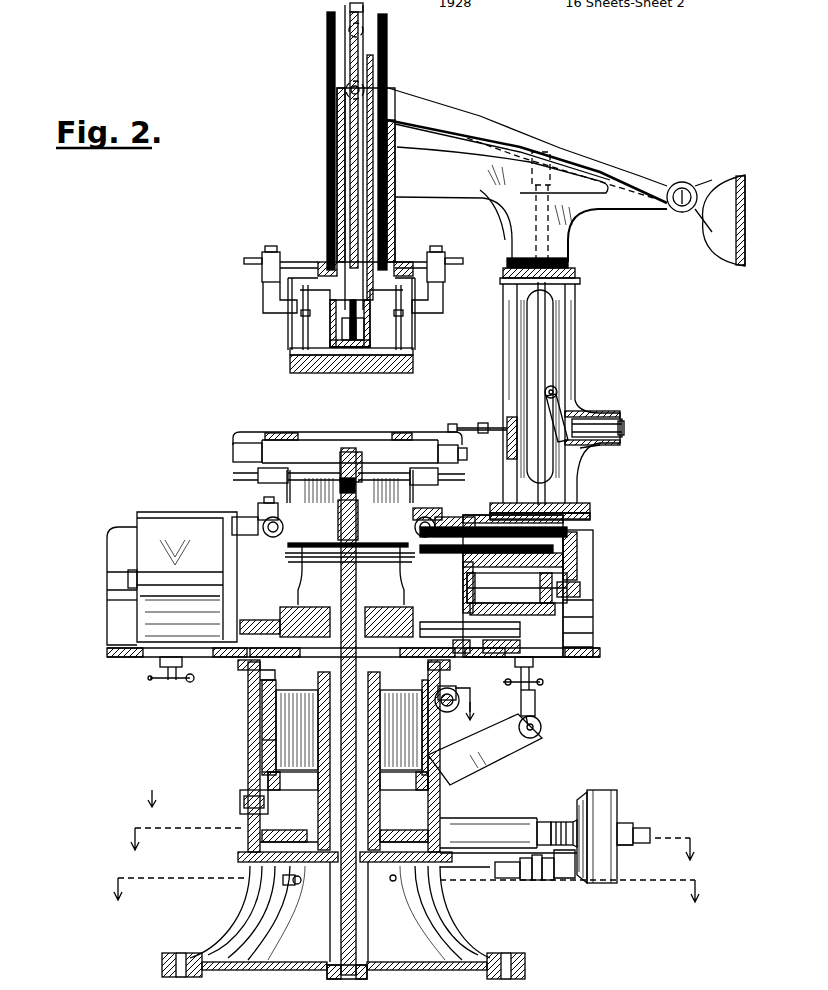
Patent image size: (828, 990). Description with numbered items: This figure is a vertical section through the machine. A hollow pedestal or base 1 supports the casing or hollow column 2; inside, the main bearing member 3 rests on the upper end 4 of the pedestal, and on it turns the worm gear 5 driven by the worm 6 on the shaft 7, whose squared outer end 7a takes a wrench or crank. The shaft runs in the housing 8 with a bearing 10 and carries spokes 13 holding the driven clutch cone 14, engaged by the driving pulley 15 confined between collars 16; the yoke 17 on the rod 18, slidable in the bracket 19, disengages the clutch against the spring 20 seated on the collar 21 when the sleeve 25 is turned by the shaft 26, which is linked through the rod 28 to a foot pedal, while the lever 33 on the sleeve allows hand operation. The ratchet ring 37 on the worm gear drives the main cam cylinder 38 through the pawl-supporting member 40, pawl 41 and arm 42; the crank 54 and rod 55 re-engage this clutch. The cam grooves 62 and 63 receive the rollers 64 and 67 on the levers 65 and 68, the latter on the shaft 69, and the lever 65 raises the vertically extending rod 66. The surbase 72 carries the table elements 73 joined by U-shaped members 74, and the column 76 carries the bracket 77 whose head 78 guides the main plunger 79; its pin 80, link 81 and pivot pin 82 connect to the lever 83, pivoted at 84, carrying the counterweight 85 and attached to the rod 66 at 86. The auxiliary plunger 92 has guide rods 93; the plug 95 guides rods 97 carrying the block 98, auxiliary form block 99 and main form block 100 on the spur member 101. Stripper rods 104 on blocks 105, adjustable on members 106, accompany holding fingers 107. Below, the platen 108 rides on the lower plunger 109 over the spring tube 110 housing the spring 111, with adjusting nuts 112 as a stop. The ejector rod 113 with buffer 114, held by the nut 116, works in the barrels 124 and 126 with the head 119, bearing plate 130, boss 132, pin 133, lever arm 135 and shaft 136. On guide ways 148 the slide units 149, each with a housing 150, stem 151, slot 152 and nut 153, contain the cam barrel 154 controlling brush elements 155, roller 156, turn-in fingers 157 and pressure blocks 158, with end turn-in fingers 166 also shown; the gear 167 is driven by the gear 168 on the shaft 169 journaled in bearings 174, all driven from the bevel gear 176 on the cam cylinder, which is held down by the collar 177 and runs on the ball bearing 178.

The pedestal or base 1 is at (195, 958).
The casing or hollow column 2 is at (252, 738).
The main bearing member 3 is at (330, 700).
The upper end of the pedestal 4 is at (255, 856).
The worm gear 5 is at (260, 843).
The worm 6 is at (315, 744).
The shaft 7 is at (413, 840).
The squared outer end 7a is at (648, 828).
The housing 8 is at (478, 822).
The bearing 10 is at (407, 886).
The spokes 13 is at (578, 823).
The driven clutch cone 14 is at (585, 792).
The driving clutch member or pulley 15 is at (612, 792).
The collars 16 is at (630, 855).
The yoke 17 is at (565, 880).
The longitudinally movable rod 18 is at (545, 880).
The bracket 19 is at (528, 880).
The spring 20 is at (552, 823).
The collar 21 is at (540, 823).
The sleeve 25 is at (513, 880).
The shaft 26 is at (468, 875).
The rod 28 is at (392, 881).
The lever 33 is at (498, 878).
The ratchet ring 37 is at (265, 835).
The main cam member or cylinder 38 is at (270, 750).
The pawl-supporting member 40 is at (250, 800).
The pawl 41 is at (290, 792).
The arm 42 is at (258, 775).
The crank 54 is at (283, 880).
The rod 55 is at (293, 882).
The cam channel or groove 62 is at (262, 762).
The second cam slot 63 is at (318, 692).
The cam follower or roller 64 is at (292, 765).
The lever 65 is at (482, 748).
The vertically extending rod 66 is at (550, 190).
The cam follower or roller 67 is at (292, 730).
The lever 68 is at (380, 768).
The shaft 69 is at (450, 700).
The surbase 72 is at (110, 652).
The table elements 73 is at (115, 530).
The U-shaped members 74 is at (118, 598).
The hollow vertically extending column 76 is at (505, 330).
The bracket 77 is at (470, 207).
The head 78 is at (340, 184).
The main plunger 79 is at (366, 9).
The pin 80 is at (362, 30).
The link 81 is at (373, 67).
The pivot pin 82 is at (347, 90).
The lever 83 is at (448, 112).
The pivot 84 is at (680, 183).
The counterweight 85 is at (730, 175).
The pivot connection 86 is at (540, 152).
The yoke-shaped auxiliary plunger 92 is at (322, 266).
The vertical guide rods 93 is at (327, 47).
The plug 95 is at (365, 318).
The rods 97 is at (336, 336).
The block 98 is at (387, 355).
The auxiliary form block 99 is at (290, 350).
The main form block 100 is at (292, 362).
The spur member 101 is at (345, 330).
The stripper rods 104 is at (290, 337).
The blocks 105 is at (262, 270).
The members 106 is at (248, 263).
The holding fingers 107 is at (303, 322).
The platen 108 is at (398, 434).
The tube or lower plunger 109 is at (380, 436).
The spring tube 110 is at (340, 938).
The spring 111 is at (345, 452).
The adjusting nuts 112 is at (330, 895).
The ejector rod 113 is at (468, 426).
The buffer 114 is at (449, 424).
The nut 116 is at (486, 422).
The head 119 is at (624, 428).
The inner barrel or plunger 124 is at (302, 612).
The second barrel or plunger 126 is at (605, 425).
The bearing plate 130 is at (508, 436).
The boss 132 is at (600, 413).
The pin 133 is at (585, 450).
The lever arm 135 is at (562, 417).
The shaft 136 is at (556, 392).
The guide ways or slides 148 is at (120, 578).
The slide units 149 is at (160, 605).
The housing 150 is at (160, 512).
The stem 151 is at (160, 662).
The slot 152 is at (478, 690).
The hand-operated nut 153 is at (150, 678).
The cam barrel or cylinder 154 is at (580, 585).
The brush elements 155 is at (282, 436).
The roller 156 is at (312, 438).
The top edge turn-in fingers 157 is at (348, 540).
The pressure blocks 158 is at (307, 548).
The end turn-in fingers 166 is at (287, 503).
The gear 167 is at (478, 583).
The gear 168 is at (452, 692).
The shaft 169 is at (275, 620).
The bearings 174 is at (402, 612).
The bevel gear 176 is at (262, 672).
The collar 177 is at (268, 680).
The ball bearing 178 is at (378, 800).